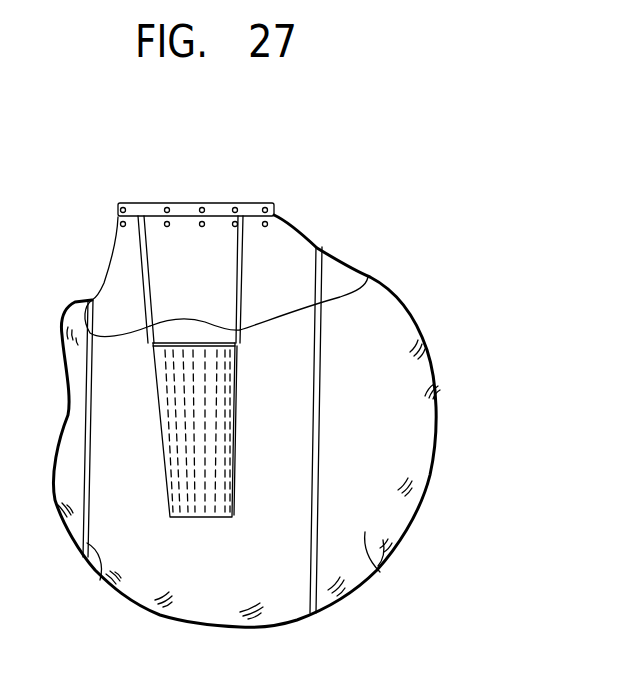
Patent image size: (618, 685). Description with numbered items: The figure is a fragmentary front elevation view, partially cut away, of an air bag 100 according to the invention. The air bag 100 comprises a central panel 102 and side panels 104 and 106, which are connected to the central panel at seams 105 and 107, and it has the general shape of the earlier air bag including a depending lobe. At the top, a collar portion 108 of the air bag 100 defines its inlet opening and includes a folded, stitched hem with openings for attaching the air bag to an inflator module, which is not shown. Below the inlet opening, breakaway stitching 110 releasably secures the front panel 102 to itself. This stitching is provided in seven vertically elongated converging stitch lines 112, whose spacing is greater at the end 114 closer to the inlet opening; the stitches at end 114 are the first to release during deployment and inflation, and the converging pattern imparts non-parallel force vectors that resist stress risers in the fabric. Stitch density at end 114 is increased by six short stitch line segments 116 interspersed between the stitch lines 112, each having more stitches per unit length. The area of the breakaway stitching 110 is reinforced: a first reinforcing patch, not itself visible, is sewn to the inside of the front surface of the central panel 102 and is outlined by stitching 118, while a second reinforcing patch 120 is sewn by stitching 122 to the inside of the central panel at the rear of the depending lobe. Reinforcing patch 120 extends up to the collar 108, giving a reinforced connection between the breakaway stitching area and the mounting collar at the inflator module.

The air bag 100 is at (345, 242).
The central panel 102 is at (247, 577).
The side panel 104 is at (73, 502).
The seam 105 is at (103, 577).
The side panel 106 is at (377, 570).
The seam 107 is at (315, 573).
The collar portion 108 is at (243, 203).
The stitching 110 is at (179, 514).
The stitch lines 112 is at (230, 447).
The end of stitch lines 114 is at (234, 353).
The stitch line segments 116 is at (241, 330).
The stitching 118 is at (234, 388).
The second reinforcing patch 120 is at (160, 260).
The stitching 122 is at (152, 292).